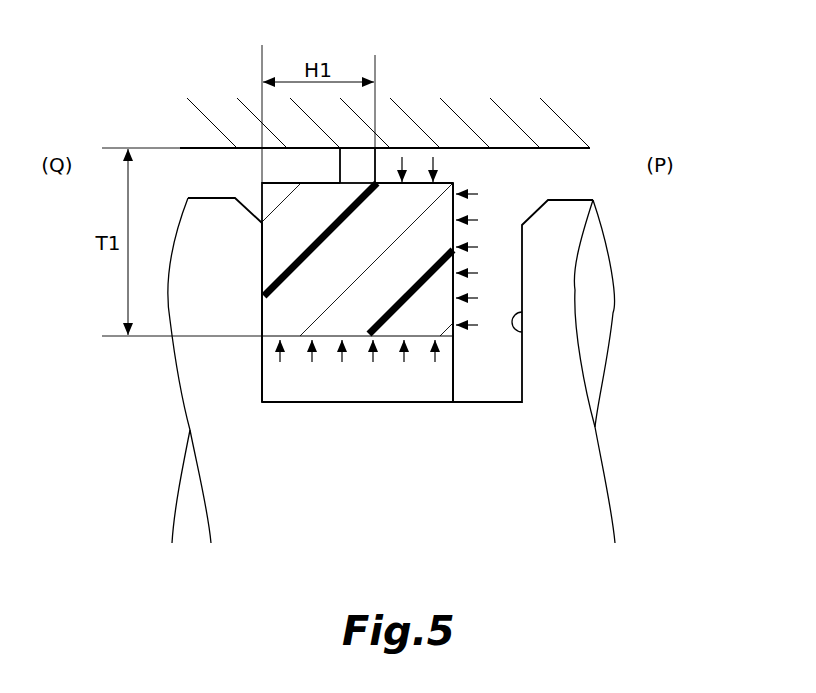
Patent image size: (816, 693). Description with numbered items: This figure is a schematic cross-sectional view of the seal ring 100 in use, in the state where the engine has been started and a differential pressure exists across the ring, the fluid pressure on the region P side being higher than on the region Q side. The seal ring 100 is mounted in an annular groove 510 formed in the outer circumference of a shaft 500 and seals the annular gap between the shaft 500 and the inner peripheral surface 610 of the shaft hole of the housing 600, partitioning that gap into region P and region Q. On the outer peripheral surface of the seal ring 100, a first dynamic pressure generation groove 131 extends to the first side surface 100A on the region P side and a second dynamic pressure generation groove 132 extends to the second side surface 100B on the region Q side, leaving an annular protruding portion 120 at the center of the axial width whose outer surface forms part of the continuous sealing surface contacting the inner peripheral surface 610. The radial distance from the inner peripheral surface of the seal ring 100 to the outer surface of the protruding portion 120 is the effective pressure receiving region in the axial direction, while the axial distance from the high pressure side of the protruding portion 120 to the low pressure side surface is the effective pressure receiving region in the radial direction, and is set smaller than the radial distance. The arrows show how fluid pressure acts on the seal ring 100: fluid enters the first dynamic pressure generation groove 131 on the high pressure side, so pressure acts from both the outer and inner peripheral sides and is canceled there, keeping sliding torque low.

The seal ring 100 is at (489, 265).
The first side surface 100A is at (455, 232).
The second side surface 100B is at (262, 317).
The protruding portion 120 is at (355, 147).
The first dynamic pressure generation groove 131 is at (413, 182).
The second dynamic pressure generation groove 132 is at (290, 182).
The shaft 500 is at (391, 370).
The annular groove 510 is at (522, 332).
The housing 600 is at (388, 103).
The inner peripheral surface 610 is at (573, 150).